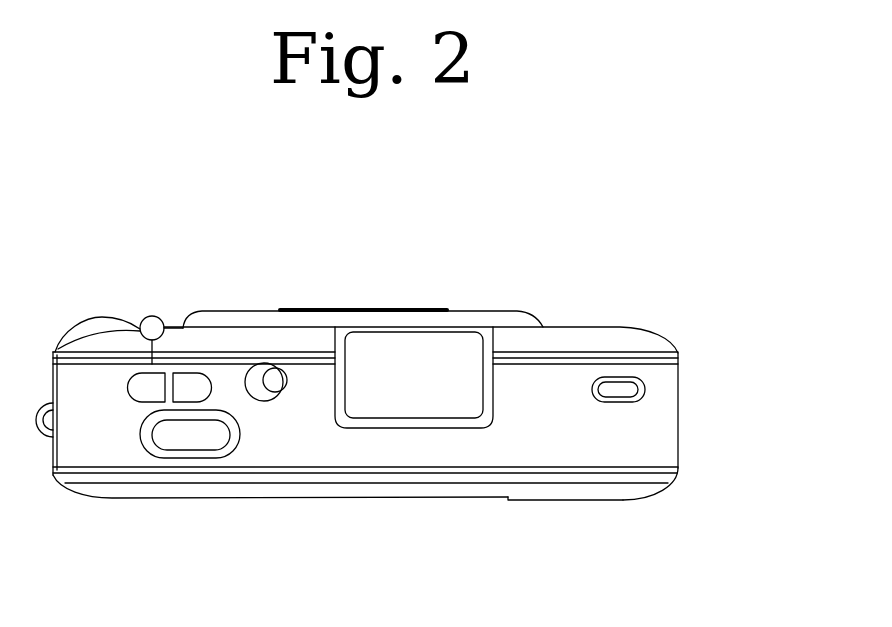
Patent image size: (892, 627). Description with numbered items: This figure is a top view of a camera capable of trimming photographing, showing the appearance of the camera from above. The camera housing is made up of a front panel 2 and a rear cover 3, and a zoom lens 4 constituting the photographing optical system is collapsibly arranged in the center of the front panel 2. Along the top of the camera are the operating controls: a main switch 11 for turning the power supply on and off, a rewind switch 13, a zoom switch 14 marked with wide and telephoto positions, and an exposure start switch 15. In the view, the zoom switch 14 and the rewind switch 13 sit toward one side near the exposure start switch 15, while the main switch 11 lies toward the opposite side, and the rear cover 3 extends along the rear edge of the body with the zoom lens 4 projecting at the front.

The front panel 2 is at (567, 342).
The rear cover 3 is at (580, 490).
The zoom lens 4 is at (370, 310).
The main switch 11 is at (640, 383).
The rewind switch 13 is at (275, 385).
The zoom switch 14 is at (203, 374).
The exposure start switch 15 is at (192, 443).